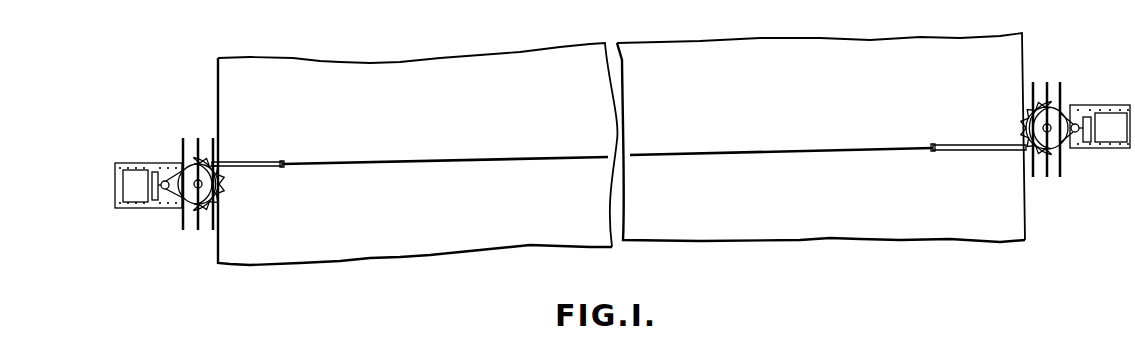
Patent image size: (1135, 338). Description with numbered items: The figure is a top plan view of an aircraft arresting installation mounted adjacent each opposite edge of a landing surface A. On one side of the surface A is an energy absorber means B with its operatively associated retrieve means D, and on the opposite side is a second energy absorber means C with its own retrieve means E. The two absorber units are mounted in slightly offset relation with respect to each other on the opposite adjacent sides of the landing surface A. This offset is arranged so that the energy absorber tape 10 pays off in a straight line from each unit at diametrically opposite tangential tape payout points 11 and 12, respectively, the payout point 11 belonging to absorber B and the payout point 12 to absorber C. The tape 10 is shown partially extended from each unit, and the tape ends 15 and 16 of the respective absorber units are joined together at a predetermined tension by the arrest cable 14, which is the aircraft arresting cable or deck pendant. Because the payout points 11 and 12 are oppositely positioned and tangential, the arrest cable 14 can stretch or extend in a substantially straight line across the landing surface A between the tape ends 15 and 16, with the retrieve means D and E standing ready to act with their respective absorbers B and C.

The energy absorber tape 10 is at (250, 158).
The tangential tape payout point 11 is at (217, 160).
The tangential tape payout point 12 is at (1027, 153).
The arrest cable 14 is at (730, 152).
The tape end 15 is at (283, 167).
The tape end 16 is at (934, 152).
The landing surface A is at (655, 220).
The energy absorber means B is at (180, 170).
The energy absorber means C is at (1053, 116).
The retrieve means D is at (123, 180).
The retrieve means E is at (1110, 126).